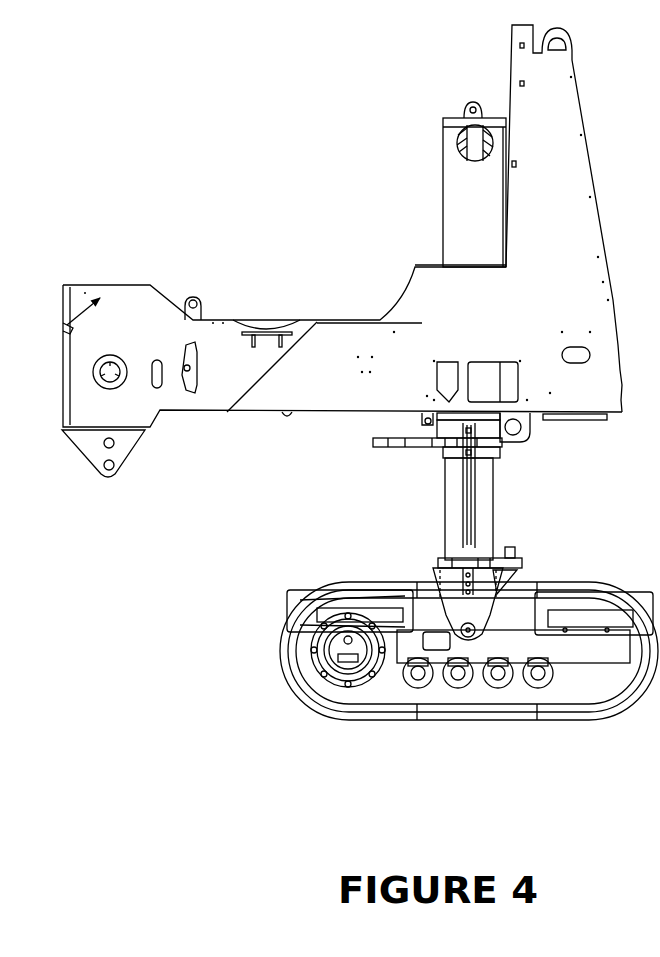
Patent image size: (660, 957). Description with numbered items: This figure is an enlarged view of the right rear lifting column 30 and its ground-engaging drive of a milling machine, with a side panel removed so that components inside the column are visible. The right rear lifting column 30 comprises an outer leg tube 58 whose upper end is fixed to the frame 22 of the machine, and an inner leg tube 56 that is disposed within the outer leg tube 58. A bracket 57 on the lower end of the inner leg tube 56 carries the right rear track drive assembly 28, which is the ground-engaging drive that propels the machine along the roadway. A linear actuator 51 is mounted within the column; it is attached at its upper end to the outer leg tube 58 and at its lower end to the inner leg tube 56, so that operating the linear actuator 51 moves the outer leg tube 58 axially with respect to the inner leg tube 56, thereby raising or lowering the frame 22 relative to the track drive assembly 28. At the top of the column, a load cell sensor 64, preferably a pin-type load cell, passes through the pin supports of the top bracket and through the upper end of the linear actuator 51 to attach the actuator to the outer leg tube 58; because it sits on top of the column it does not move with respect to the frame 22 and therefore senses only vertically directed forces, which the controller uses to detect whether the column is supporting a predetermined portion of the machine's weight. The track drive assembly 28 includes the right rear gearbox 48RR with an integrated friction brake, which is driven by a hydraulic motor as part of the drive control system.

The frame 22 is at (204, 418).
The right rear track drive assembly 28 is at (420, 675).
The right rear lifting column 30 is at (441, 230).
The linear actuator 51 is at (478, 157).
The inner leg tube 56 is at (496, 508).
The bracket 57 is at (431, 575).
The outer leg tube 58 is at (458, 195).
The load cell sensor 64 is at (474, 107).
The right rear gearbox 48RR is at (340, 677).